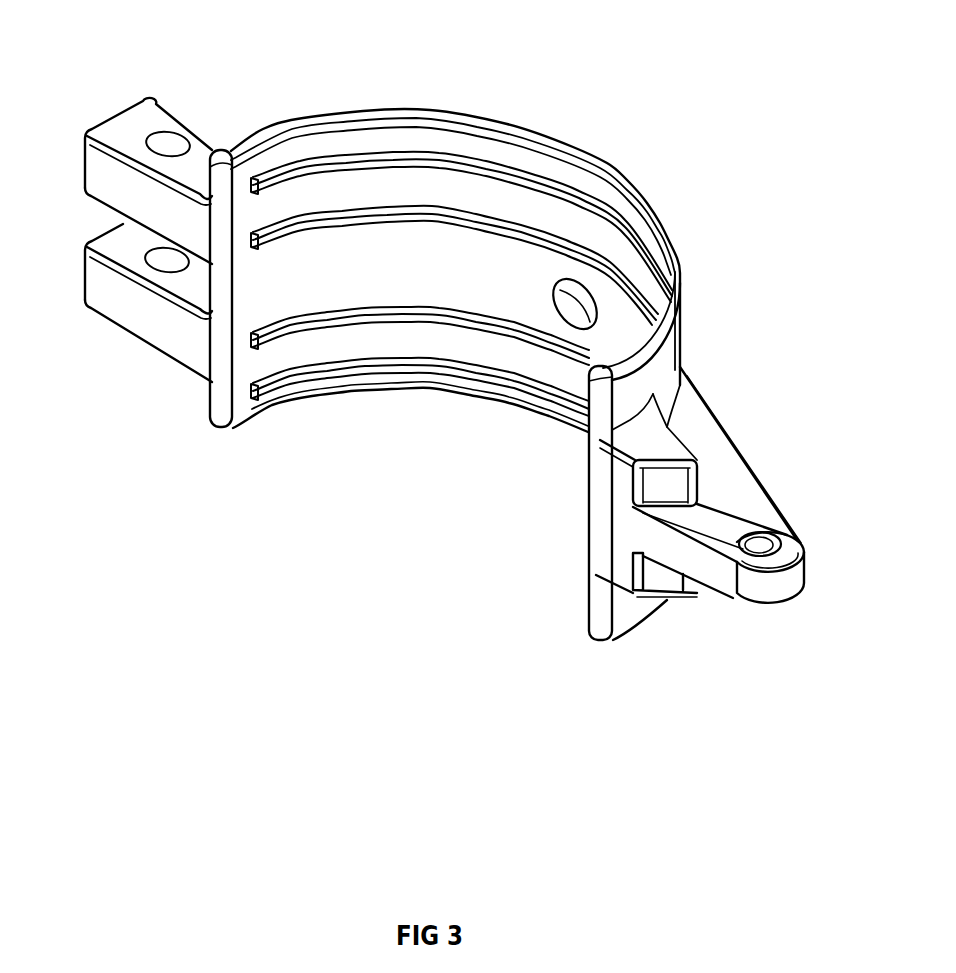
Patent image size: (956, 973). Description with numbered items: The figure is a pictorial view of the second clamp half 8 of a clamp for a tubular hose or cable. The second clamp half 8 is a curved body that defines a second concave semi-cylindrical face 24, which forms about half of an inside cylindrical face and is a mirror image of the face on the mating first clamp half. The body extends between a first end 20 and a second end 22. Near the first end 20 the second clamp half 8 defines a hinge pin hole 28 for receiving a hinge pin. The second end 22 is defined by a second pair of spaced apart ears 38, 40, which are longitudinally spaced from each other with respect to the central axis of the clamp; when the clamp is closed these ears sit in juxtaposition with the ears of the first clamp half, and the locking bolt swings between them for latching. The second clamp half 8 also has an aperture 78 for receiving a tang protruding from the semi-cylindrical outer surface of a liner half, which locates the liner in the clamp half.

The second clamp half 8 is at (660, 212).
The first end 20 is at (741, 550).
The second end 22 is at (152, 210).
The second concave semi-cylindrical face 24 is at (483, 270).
The hinge pin hole 28 is at (765, 547).
The ear 38 is at (120, 128).
The ear 40 is at (123, 307).
The aperture 78 is at (577, 306).